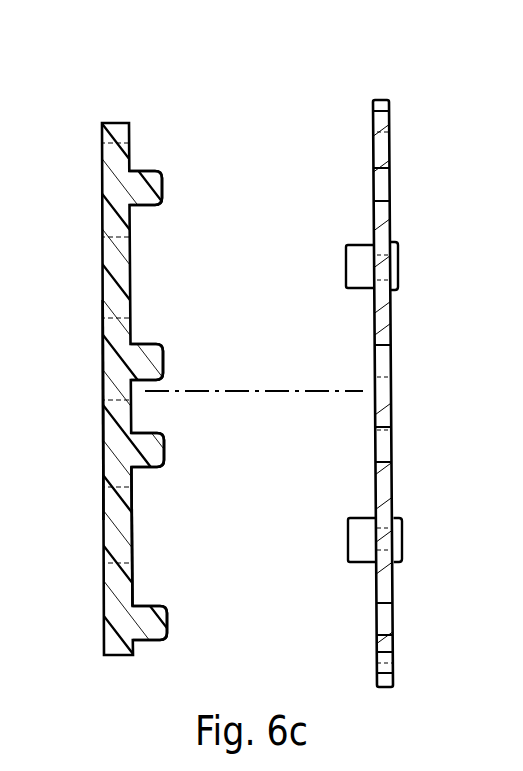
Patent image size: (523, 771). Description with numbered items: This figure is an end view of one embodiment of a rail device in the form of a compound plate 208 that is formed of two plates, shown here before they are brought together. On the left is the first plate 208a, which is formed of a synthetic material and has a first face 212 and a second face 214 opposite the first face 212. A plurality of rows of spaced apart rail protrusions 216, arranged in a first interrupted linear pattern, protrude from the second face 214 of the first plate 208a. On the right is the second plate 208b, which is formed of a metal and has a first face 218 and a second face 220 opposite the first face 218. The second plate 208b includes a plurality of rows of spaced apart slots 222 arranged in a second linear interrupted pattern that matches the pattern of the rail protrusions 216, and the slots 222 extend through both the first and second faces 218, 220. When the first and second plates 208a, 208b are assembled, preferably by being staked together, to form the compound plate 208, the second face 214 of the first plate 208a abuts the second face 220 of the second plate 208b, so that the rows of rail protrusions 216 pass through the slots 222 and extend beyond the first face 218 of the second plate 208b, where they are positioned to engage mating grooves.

The compound plate 208 is at (146, 58).
The first plate 208a is at (113, 123).
The second plate 208b is at (380, 100).
The first face 212 is at (103, 410).
The second face 214 is at (133, 543).
The rail protrusions 216 is at (163, 190).
The first face 218 is at (393, 485).
The second face 220 is at (376, 572).
The slots 222 is at (391, 188).